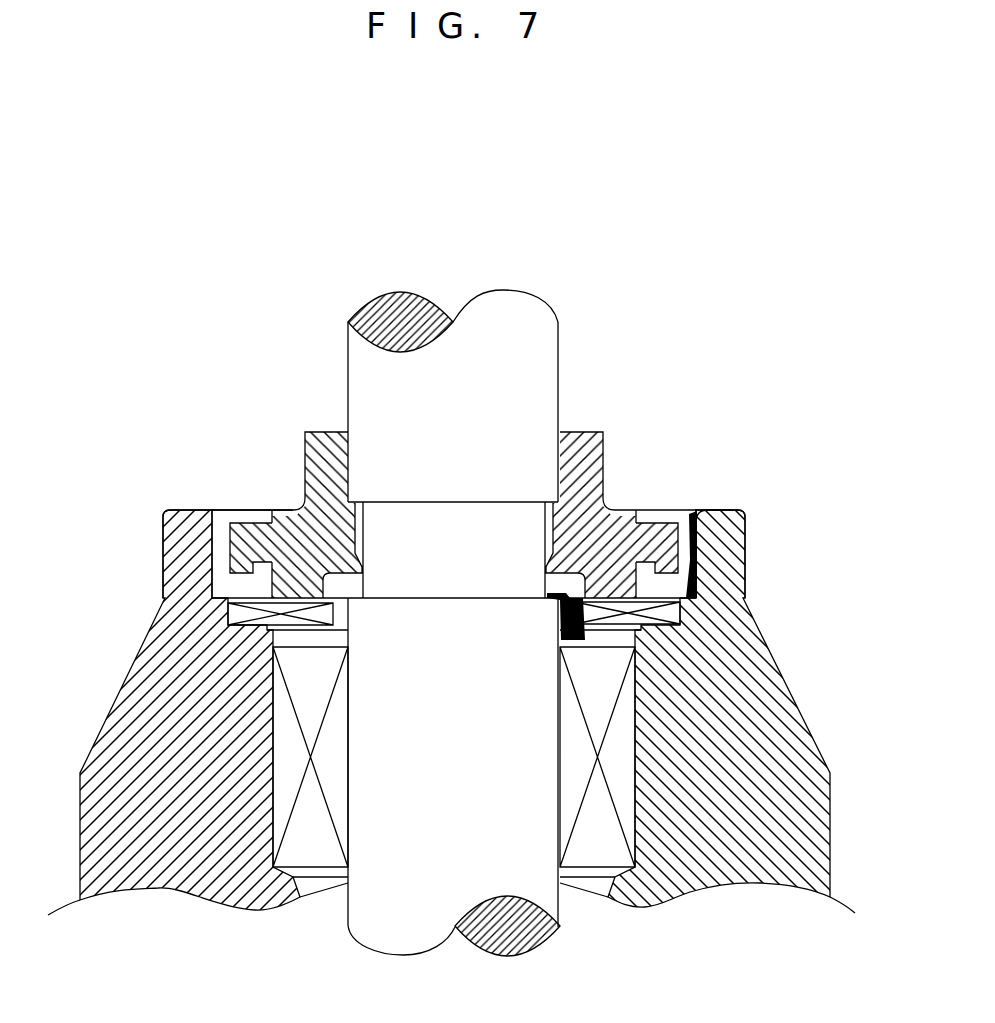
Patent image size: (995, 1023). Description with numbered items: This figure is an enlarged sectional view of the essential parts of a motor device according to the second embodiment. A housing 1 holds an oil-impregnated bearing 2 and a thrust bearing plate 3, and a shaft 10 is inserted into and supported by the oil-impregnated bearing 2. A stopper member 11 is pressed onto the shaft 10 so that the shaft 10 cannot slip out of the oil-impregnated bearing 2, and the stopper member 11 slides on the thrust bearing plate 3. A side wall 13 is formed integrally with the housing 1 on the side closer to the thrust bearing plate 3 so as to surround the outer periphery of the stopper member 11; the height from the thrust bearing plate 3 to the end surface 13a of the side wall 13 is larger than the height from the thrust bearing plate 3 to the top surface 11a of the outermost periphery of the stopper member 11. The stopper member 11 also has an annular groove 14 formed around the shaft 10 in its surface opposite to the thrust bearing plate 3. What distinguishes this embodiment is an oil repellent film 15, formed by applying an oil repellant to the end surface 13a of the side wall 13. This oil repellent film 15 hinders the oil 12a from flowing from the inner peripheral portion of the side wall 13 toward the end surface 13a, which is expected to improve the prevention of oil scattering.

The housing 1 is at (723, 753).
The oil-impregnated bearing 2 is at (623, 787).
The thrust bearing plate 3 is at (232, 614).
The shaft 10 is at (483, 333).
The stopper member 11 is at (578, 440).
The top surface of outermost periphery of the stopper member 11a is at (240, 525).
The oil 12a is at (670, 555).
The side wall 13 is at (753, 513).
The end surface of the side wall 13a is at (183, 512).
The annular groove 14 is at (260, 562).
The oil repellent film 15 is at (722, 509).